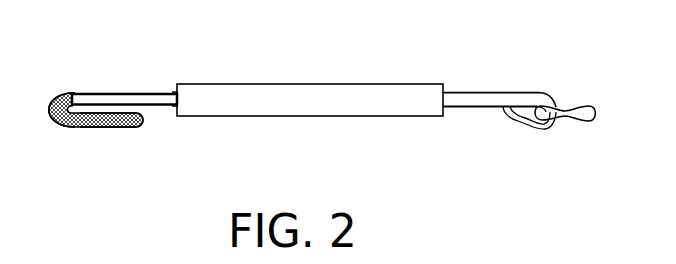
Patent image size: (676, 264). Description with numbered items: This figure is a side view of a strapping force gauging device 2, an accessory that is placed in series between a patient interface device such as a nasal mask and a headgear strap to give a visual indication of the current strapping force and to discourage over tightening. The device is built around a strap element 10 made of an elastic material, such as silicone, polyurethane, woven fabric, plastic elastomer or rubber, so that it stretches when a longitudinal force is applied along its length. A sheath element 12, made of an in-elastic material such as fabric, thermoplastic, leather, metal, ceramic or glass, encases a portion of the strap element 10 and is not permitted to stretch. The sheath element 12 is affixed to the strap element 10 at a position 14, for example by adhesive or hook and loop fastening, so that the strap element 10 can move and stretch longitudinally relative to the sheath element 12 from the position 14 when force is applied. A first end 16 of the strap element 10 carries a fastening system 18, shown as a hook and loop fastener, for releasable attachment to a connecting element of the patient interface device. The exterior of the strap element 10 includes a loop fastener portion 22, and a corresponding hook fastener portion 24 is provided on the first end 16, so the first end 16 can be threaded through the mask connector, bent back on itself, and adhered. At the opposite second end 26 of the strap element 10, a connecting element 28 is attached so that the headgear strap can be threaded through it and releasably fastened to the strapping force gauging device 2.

The strapping force gauging device 2 is at (408, 74).
The strap element 10 is at (483, 93).
The sheath element 12 is at (308, 101).
The position 14 is at (176, 92).
The first end 16 is at (72, 92).
The fastening system 18 is at (77, 128).
The loop fastener portion 22 is at (112, 97).
The hook fastener portion 24 is at (118, 128).
The second end 26 is at (540, 100).
The connecting element 28 is at (597, 112).